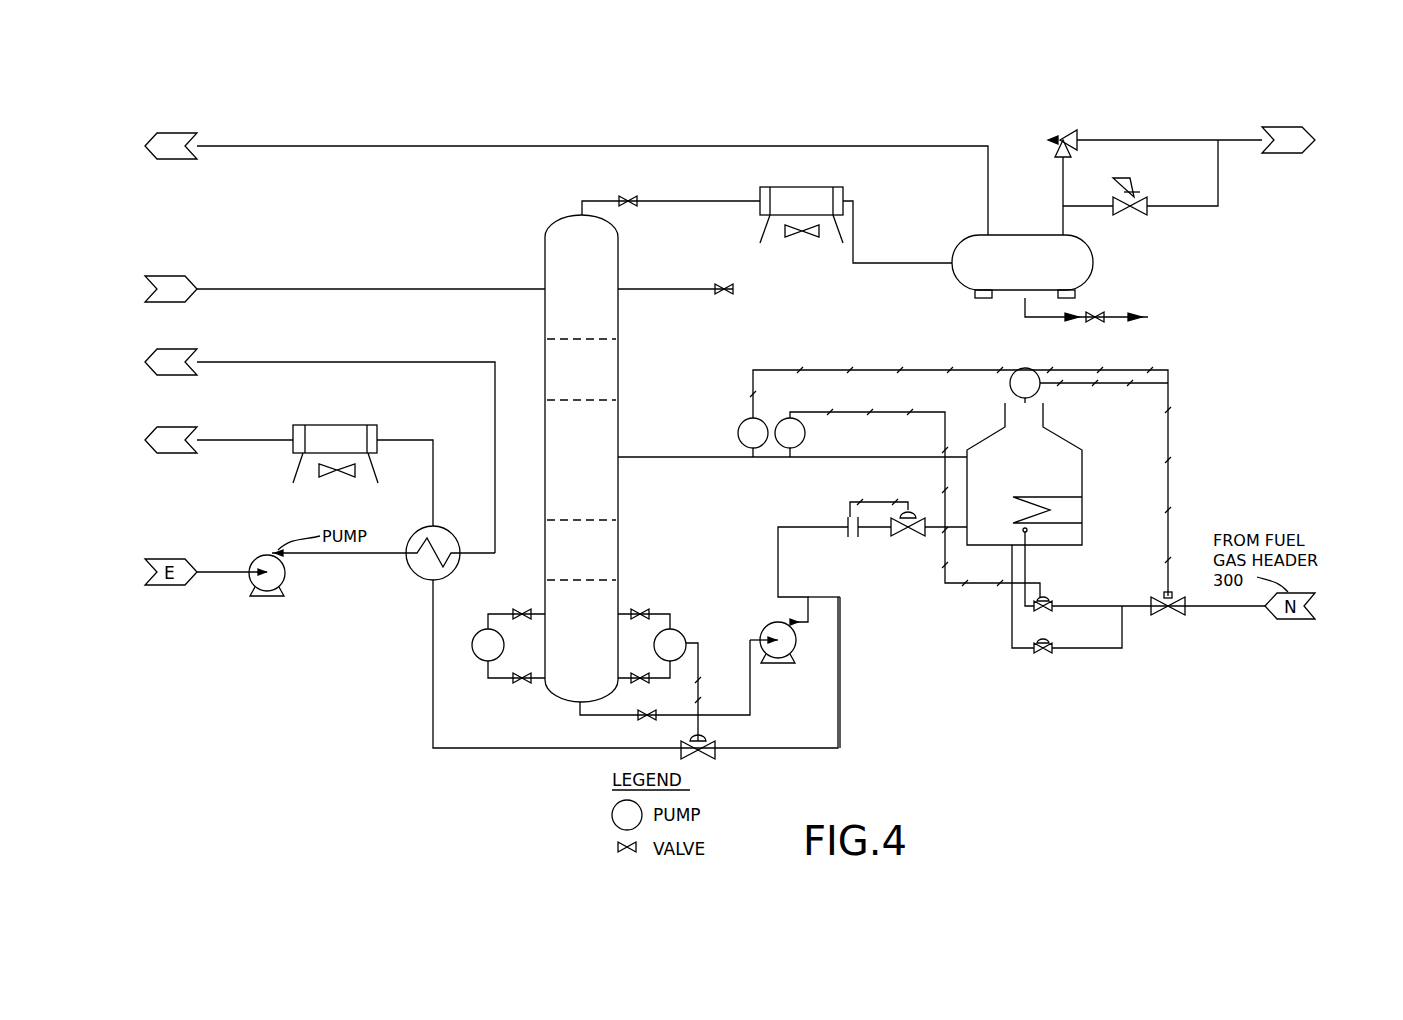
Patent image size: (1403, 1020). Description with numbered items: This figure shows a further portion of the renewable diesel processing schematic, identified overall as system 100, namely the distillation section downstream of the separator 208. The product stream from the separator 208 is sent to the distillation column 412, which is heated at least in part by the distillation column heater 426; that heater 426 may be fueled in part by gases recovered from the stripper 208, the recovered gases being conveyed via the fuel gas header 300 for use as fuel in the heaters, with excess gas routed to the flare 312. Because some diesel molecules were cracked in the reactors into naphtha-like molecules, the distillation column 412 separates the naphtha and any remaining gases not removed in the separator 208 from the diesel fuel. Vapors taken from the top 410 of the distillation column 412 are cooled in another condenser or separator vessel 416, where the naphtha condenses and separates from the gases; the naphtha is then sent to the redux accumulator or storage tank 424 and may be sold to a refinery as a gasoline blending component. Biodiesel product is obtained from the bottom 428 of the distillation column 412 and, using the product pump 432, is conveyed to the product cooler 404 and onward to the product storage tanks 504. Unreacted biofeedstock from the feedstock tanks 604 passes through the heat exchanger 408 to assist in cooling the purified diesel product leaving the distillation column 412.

The feedstock processing system 100 is at (300, 728).
The fuel gas header 300 is at (172, 134).
The separator 208 is at (170, 276).
The feedstock tanks 604 is at (170, 348).
The product storage tanks 504 is at (175, 455).
The product cooler 404 is at (340, 425).
The heat exchanger 408 is at (452, 528).
The top of the distillation column 410 is at (628, 272).
The distillation column 412 is at (617, 443).
The condenser or separator vessel 416 is at (812, 187).
The redux accumulator or storage tank 424 is at (1095, 262).
The distillation column heater 426 is at (1063, 437).
The bottom of the distillation column 428 is at (548, 693).
The product pump 432 is at (766, 626).
The flare 312 is at (1284, 128).